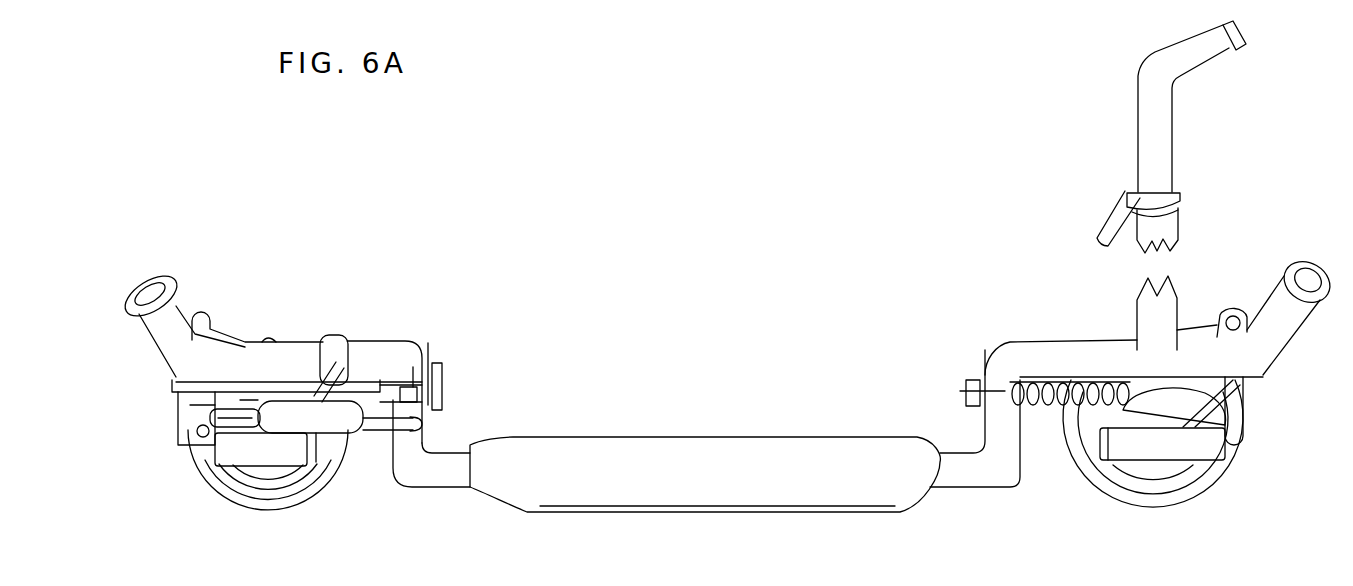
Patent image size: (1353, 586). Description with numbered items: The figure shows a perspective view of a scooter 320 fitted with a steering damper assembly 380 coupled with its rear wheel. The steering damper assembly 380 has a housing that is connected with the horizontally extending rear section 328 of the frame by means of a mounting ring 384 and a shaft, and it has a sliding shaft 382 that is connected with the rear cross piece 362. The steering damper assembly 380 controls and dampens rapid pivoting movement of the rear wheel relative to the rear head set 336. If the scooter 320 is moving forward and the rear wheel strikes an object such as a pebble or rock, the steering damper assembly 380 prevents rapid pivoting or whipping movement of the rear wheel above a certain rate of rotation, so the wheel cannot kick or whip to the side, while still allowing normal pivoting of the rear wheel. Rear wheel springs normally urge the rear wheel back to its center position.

The scooter 320 is at (607, 387).
The horizontally extending rear section 328 is at (243, 358).
The rear head set 336 is at (152, 292).
The rear cross piece 362 is at (205, 400).
The steering damper assembly 380 is at (314, 422).
The sliding shaft 382 is at (243, 412).
The mounting ring 384 is at (333, 346).